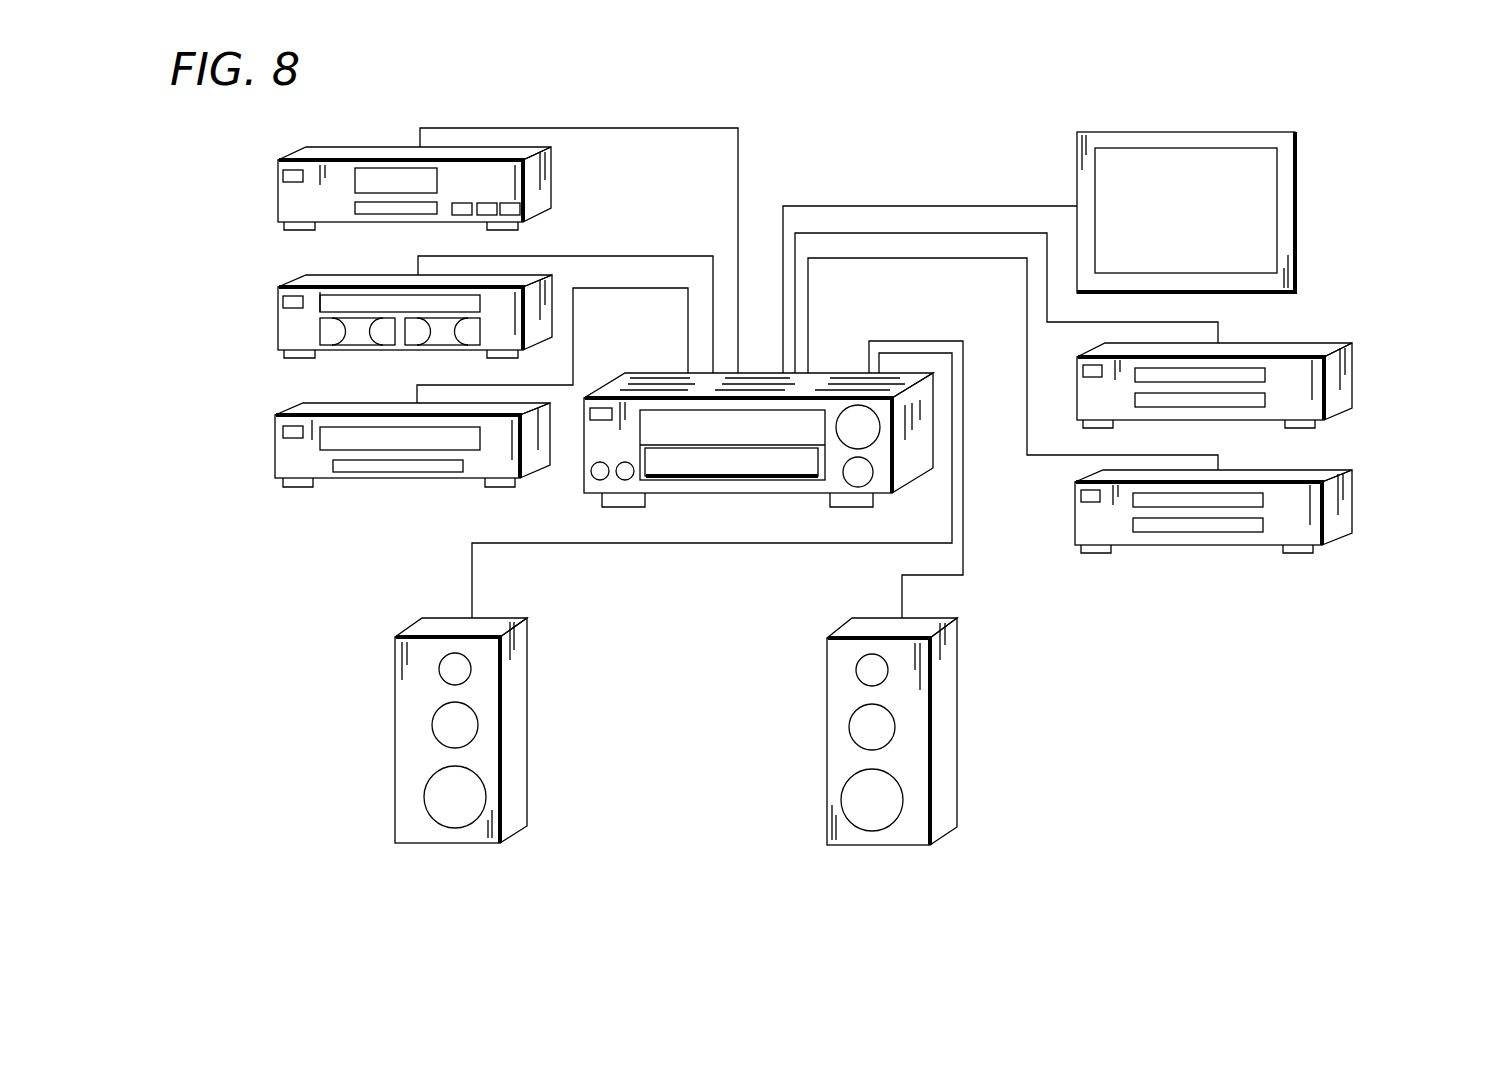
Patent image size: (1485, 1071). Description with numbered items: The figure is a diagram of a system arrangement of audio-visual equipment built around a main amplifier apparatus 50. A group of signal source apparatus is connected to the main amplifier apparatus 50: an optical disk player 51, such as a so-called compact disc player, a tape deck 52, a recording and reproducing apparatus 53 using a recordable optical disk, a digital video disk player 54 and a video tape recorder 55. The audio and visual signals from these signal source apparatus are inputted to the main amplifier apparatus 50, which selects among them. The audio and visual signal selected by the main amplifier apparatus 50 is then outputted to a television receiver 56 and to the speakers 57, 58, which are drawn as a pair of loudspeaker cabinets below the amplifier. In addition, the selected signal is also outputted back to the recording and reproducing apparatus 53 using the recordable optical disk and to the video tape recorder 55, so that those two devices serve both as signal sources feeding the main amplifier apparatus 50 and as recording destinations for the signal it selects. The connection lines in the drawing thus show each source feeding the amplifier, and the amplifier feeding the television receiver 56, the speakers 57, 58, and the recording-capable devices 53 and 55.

The main amplifier apparatus 50 is at (648, 372).
The optical disk player 51 is at (553, 173).
The tape deck 52 is at (278, 335).
The recording and reproducing apparatus 53 is at (275, 454).
The digital video disk player 54 is at (1312, 345).
The video tape recorder 55 is at (1335, 528).
The television receiver 56 is at (1077, 155).
The speaker 57 is at (528, 711).
The speaker 58 is at (955, 691).